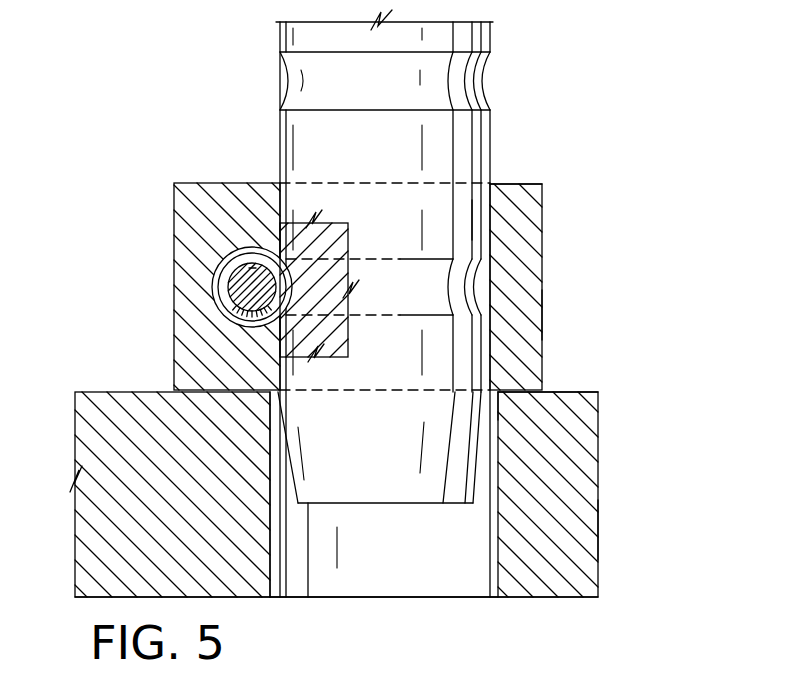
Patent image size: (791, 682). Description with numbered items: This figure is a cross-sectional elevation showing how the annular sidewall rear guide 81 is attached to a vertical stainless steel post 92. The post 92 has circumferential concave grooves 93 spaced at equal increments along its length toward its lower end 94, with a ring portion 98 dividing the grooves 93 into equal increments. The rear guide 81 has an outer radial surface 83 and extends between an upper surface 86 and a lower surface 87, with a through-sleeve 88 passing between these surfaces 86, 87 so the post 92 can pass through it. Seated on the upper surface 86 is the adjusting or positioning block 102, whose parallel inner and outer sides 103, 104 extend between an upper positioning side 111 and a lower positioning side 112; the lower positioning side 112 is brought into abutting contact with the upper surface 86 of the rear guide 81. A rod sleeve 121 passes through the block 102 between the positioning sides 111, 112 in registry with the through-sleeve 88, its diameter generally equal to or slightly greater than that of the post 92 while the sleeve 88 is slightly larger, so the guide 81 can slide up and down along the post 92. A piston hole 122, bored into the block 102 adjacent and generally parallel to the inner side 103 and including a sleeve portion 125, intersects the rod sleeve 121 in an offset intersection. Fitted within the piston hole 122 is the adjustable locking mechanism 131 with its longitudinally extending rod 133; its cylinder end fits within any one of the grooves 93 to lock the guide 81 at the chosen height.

The annular sidewall rear guide 81 is at (610, 475).
The outer radial surface 83 is at (598, 522).
The upper surface 86 is at (580, 392).
The lower surface 87 is at (552, 597).
The through-sleeve 88 is at (273, 570).
The vertical stainless steel post 92 is at (505, 40).
The circumferential concave groove 93 is at (479, 80).
The lower end 94 is at (432, 500).
The ring portion 98 is at (279, 135).
The adjusting or positioning block 102 is at (556, 218).
The inner side 103 is at (173, 345).
The outer side 104 is at (542, 315).
The upper positioning side 111 is at (512, 183).
The lower positioning side 112 is at (557, 403).
The rod sleeve 121 is at (487, 212).
The piston hole 122 is at (205, 258).
The sleeve portion 125 is at (208, 247).
The adjustable locking mechanism 131 is at (204, 291).
The longitudinally extending rod 133 is at (252, 270).